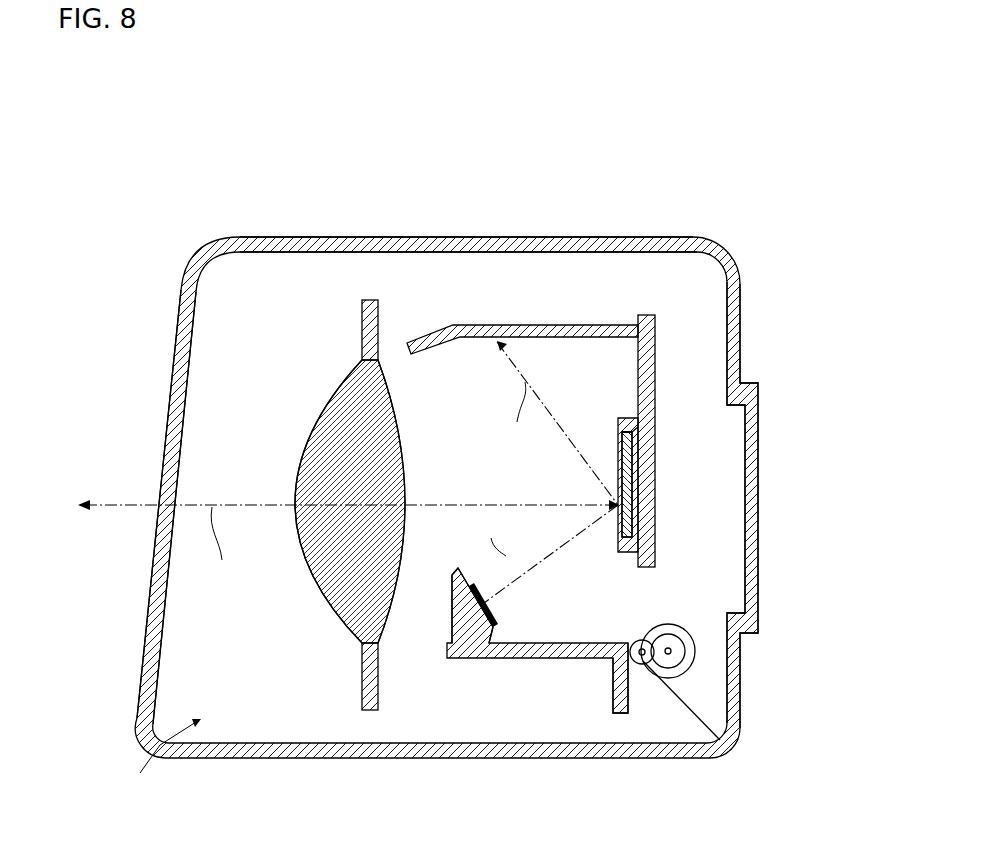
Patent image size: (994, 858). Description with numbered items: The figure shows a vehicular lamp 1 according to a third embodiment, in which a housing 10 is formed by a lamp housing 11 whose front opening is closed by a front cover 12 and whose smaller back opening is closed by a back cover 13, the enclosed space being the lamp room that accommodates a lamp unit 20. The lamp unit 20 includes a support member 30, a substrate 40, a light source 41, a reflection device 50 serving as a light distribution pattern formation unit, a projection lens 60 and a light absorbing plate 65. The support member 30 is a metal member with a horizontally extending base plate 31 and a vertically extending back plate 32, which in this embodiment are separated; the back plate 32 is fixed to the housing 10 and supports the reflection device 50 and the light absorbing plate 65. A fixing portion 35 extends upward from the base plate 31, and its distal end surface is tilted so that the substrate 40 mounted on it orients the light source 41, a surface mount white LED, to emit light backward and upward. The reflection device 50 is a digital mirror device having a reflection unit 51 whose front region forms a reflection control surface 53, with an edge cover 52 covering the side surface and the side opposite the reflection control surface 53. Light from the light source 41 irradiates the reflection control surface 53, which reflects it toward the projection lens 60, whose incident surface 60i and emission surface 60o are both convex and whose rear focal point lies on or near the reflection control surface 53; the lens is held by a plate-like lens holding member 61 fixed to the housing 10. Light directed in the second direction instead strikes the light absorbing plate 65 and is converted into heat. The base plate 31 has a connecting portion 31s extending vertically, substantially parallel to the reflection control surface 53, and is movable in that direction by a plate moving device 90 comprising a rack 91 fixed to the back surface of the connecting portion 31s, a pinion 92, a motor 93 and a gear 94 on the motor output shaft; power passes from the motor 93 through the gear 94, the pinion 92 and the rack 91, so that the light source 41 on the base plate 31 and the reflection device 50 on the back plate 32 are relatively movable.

The projection-type image display apparatus 1 is at (162, 130).
The housing 10 is at (467, 415).
The lamp housing 11 is at (346, 240).
The front cover 12 is at (272, 240).
The back cover 13 is at (760, 395).
The lamp unit 20 is at (346, 496).
The support member 30 is at (608, 504).
The base plate 31 is at (537, 687).
The connecting portion 31s is at (615, 696).
The back plate 32 is at (655, 473).
The fixing portion 35 is at (451, 635).
The substrate 40 is at (507, 694).
The light source 41 is at (478, 598).
The reflection device 50 is at (633, 484).
The reflection unit 51 is at (616, 520).
The edge cover 52 is at (638, 430).
The reflection control surface 53 is at (626, 551).
The projection lens 60 is at (348, 501).
The emission surface 60o is at (315, 560).
The incident surface 60i is at (401, 556).
The lens holding member 61 is at (358, 676).
The light absorbing plate 65 is at (468, 325).
The plate moving device 90 is at (719, 682).
The rack 91 is at (630, 690).
The pinion 92 is at (673, 677).
The motor 93 is at (697, 643).
The gear 94 is at (684, 672).